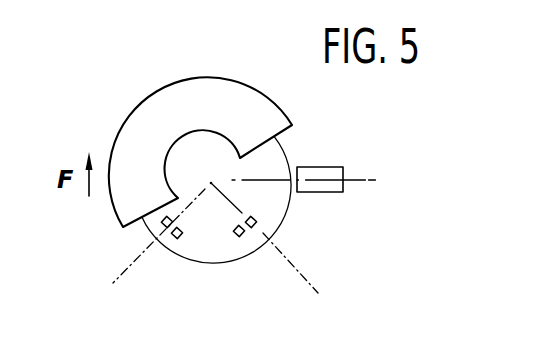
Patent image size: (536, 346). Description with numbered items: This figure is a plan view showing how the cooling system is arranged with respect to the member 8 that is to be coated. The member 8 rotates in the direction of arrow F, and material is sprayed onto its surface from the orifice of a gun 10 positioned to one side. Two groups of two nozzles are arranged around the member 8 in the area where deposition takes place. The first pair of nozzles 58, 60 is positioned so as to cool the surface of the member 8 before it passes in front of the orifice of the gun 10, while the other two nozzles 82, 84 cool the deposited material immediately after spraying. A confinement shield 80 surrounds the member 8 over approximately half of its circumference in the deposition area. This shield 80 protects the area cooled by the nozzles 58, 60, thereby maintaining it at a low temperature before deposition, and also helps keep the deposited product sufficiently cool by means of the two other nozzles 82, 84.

The member 8 is at (206, 250).
The gun 10 is at (313, 167).
The nozzle 58 is at (176, 240).
The nozzle 60 is at (162, 222).
The confinement shield 80 is at (155, 107).
The nozzle 82 is at (240, 240).
The nozzle 84 is at (257, 227).